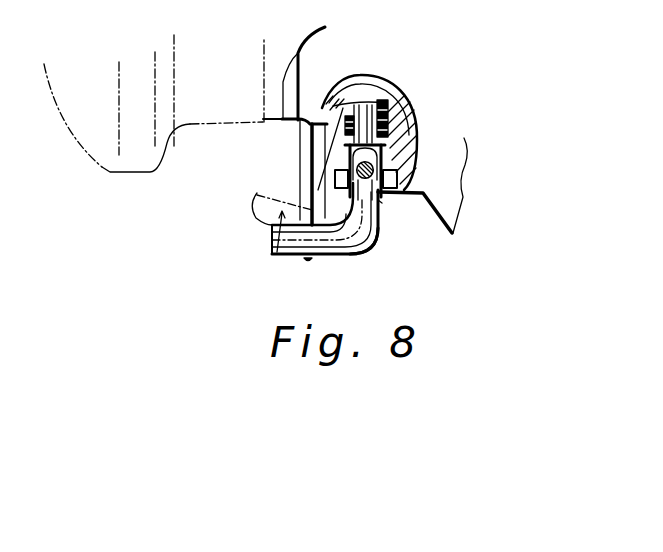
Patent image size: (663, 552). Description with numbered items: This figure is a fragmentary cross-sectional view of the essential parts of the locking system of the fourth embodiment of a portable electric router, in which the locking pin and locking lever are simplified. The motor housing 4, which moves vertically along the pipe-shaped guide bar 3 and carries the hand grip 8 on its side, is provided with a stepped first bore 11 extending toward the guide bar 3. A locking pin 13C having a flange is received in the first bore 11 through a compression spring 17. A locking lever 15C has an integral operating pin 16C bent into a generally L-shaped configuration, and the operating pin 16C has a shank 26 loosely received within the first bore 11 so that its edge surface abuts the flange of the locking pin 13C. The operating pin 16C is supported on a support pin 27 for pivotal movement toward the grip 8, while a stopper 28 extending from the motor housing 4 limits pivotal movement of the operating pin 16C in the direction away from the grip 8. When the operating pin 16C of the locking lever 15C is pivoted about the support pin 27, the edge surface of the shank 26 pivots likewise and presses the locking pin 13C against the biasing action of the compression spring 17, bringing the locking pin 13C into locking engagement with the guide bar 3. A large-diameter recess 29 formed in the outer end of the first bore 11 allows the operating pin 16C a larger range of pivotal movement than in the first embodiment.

The guide bar 3 is at (372, 103).
The motor housing 4 is at (335, 143).
The hand grip 8 is at (128, 162).
The first bore 11 is at (400, 153).
The locking pin 13C is at (383, 106).
The locking lever 15C is at (281, 254).
The operating pin 16C is at (382, 242).
The compression spring 17 is at (386, 108).
The shank 26 is at (382, 203).
The support pin 27 is at (397, 170).
The stopper 28 is at (310, 180).
The large-diameter recess 29 is at (397, 183).